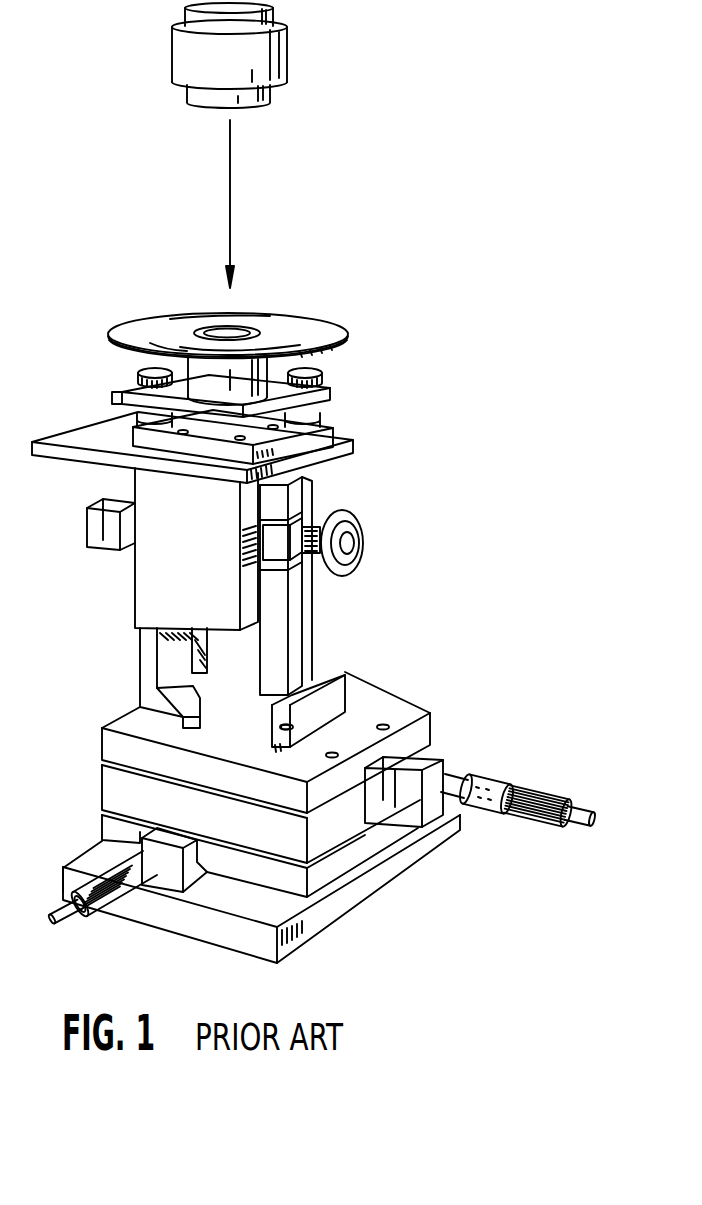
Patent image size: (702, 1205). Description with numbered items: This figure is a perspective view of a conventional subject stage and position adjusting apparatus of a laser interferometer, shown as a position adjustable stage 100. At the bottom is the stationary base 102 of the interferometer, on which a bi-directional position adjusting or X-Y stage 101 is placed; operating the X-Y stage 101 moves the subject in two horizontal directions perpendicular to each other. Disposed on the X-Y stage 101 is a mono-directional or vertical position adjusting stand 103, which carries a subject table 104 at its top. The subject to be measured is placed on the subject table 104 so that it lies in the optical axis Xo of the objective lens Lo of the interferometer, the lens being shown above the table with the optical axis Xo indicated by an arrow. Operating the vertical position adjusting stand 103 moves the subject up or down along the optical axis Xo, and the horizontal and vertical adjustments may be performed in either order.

The position adjustable stage 100 is at (314, 615).
The X-Y stage 101 is at (440, 727).
The stationary base 102 is at (390, 878).
The vertical position adjusting stand 103 is at (313, 503).
The subject table 104 is at (317, 328).
The objective lens Lo is at (289, 53).
The optical axis Xo is at (231, 226).